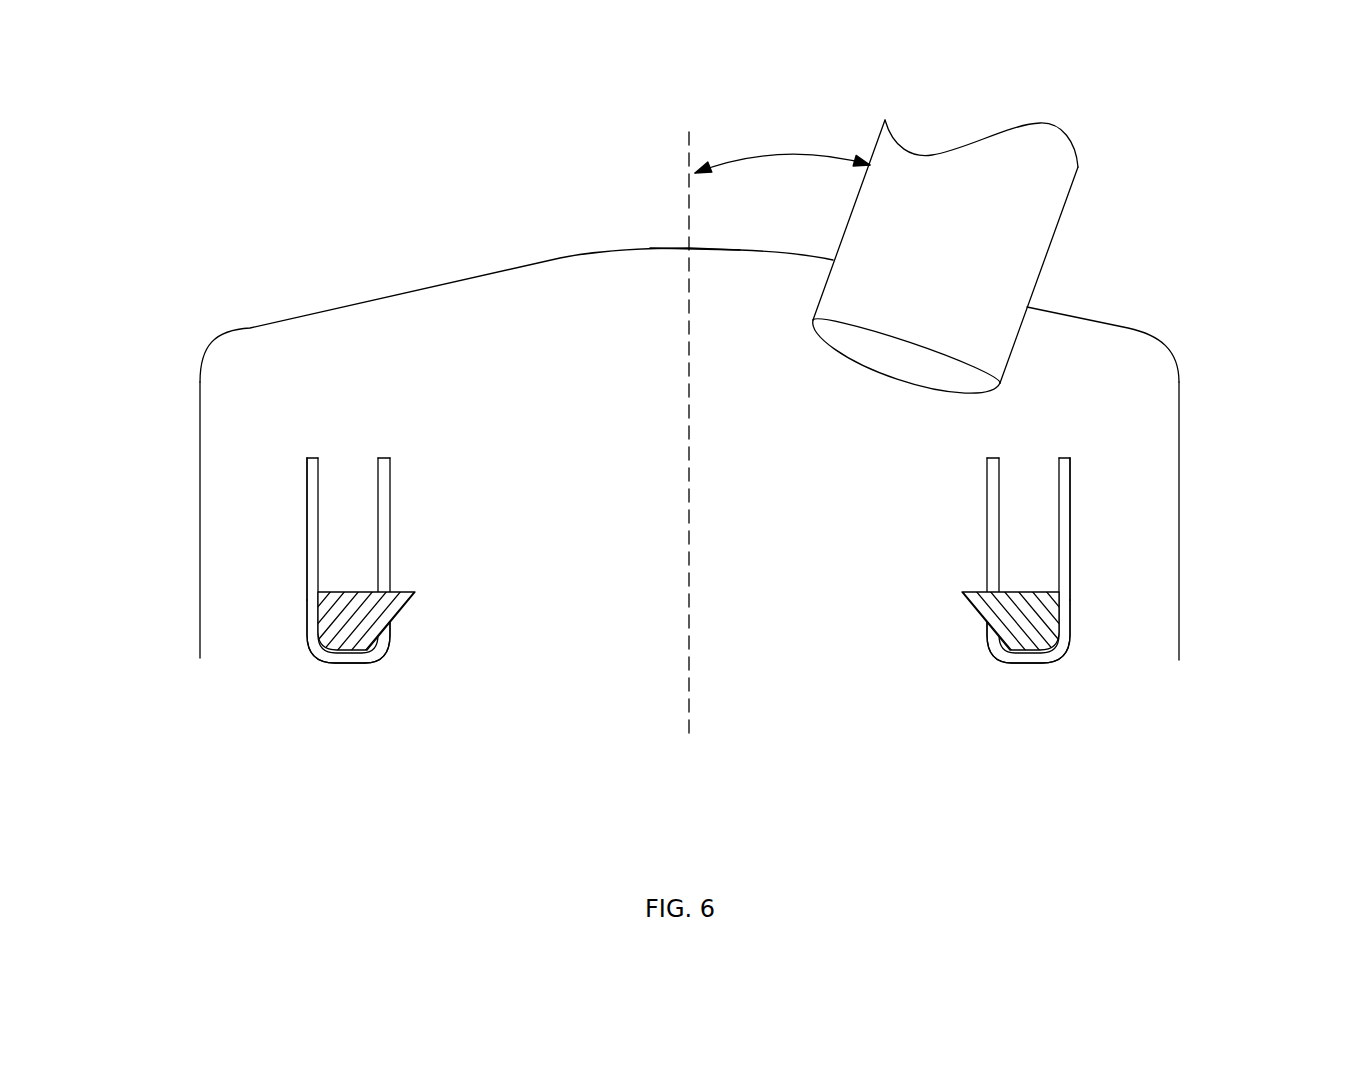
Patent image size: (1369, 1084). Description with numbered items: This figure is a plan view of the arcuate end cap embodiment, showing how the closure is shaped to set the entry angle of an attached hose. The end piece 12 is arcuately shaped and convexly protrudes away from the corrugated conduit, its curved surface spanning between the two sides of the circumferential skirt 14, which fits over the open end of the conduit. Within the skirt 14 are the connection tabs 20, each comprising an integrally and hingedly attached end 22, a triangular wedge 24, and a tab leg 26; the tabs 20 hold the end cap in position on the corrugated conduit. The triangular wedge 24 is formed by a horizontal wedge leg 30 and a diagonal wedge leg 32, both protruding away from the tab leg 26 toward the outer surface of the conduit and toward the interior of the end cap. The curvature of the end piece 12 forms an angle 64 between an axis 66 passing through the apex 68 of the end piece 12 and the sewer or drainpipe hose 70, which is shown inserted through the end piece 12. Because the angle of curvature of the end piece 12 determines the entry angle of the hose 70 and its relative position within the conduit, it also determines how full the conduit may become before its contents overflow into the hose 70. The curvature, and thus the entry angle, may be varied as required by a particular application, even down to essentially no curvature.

The end piece 12 is at (350, 307).
The circumferential skirt 14 is at (200, 383).
The connection tab 20 is at (358, 508).
The hingedly attached end 22 is at (345, 462).
The triangular wedge 24 is at (408, 607).
The tab leg 26 is at (307, 488).
The horizontal wedge leg 30 is at (327, 603).
The diagonal wedge leg 32 is at (336, 617).
The angle 64 is at (790, 157).
The axis 66 is at (688, 181).
The apex 68 is at (687, 246).
The sewer or drainpipe hose 70 is at (1053, 240).